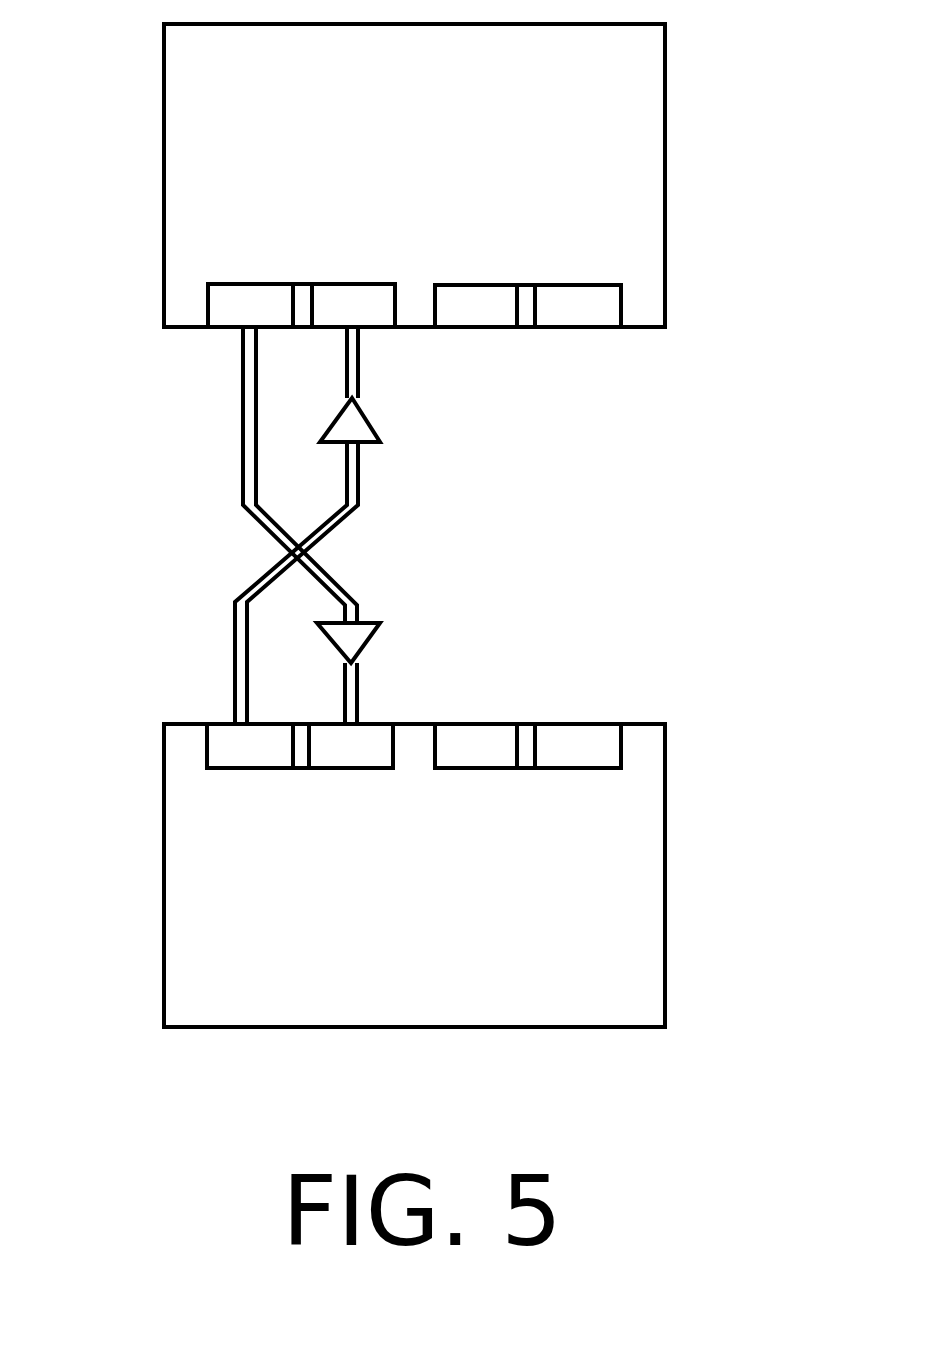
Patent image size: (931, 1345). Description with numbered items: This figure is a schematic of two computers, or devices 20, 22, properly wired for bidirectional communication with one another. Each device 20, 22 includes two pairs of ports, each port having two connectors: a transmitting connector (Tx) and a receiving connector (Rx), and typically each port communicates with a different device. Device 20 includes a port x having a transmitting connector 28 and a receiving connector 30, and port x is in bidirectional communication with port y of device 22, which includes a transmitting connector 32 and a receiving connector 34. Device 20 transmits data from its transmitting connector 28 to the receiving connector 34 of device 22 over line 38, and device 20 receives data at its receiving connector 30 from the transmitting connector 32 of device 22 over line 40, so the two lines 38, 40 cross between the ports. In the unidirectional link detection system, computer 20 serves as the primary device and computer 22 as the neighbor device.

The computer (device) 20 is at (665, 146).
The computer (device) 22 is at (665, 855).
The transmitting connector 28 is at (237, 303).
The receiving connector 30 is at (357, 305).
The transmitting connector 32 is at (227, 747).
The receiving connector 34 is at (360, 737).
The line 38 is at (336, 578).
The line 40 is at (358, 468).